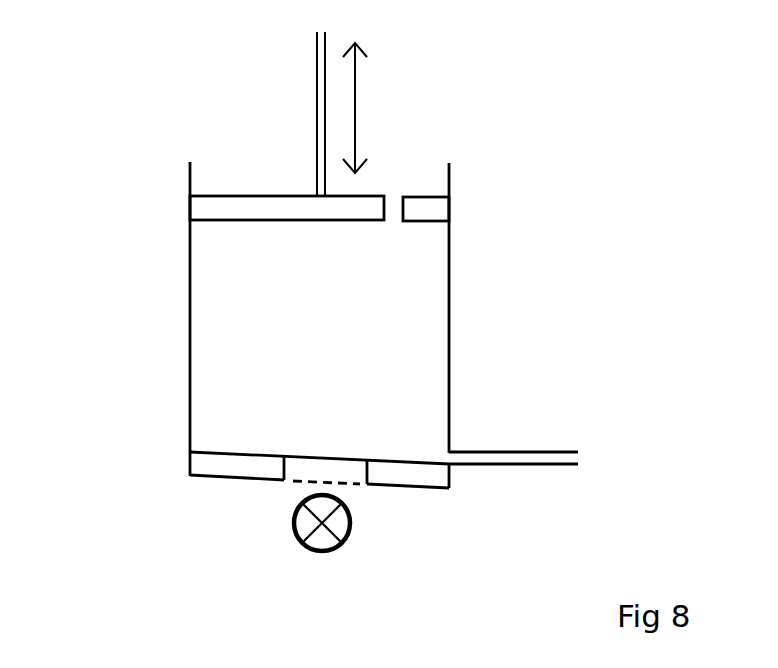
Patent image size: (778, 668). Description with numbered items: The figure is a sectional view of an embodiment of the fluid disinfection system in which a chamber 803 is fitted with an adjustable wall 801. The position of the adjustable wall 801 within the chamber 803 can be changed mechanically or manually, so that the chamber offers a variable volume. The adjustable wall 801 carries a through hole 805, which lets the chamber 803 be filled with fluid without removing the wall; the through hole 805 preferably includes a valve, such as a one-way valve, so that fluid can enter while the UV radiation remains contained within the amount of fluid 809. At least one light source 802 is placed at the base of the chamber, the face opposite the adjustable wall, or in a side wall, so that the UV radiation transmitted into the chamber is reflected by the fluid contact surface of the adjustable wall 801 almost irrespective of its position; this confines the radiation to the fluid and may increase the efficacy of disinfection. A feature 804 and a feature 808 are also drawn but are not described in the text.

The adjustable wall 801 is at (265, 208).
The light source 802 is at (288, 518).
The chamber 803 is at (182, 319).
The outlet channel 804 is at (510, 438).
The through hole 805 is at (392, 195).
The window in bottom plate 808 is at (357, 488).
The amount of fluid 809 is at (387, 299).